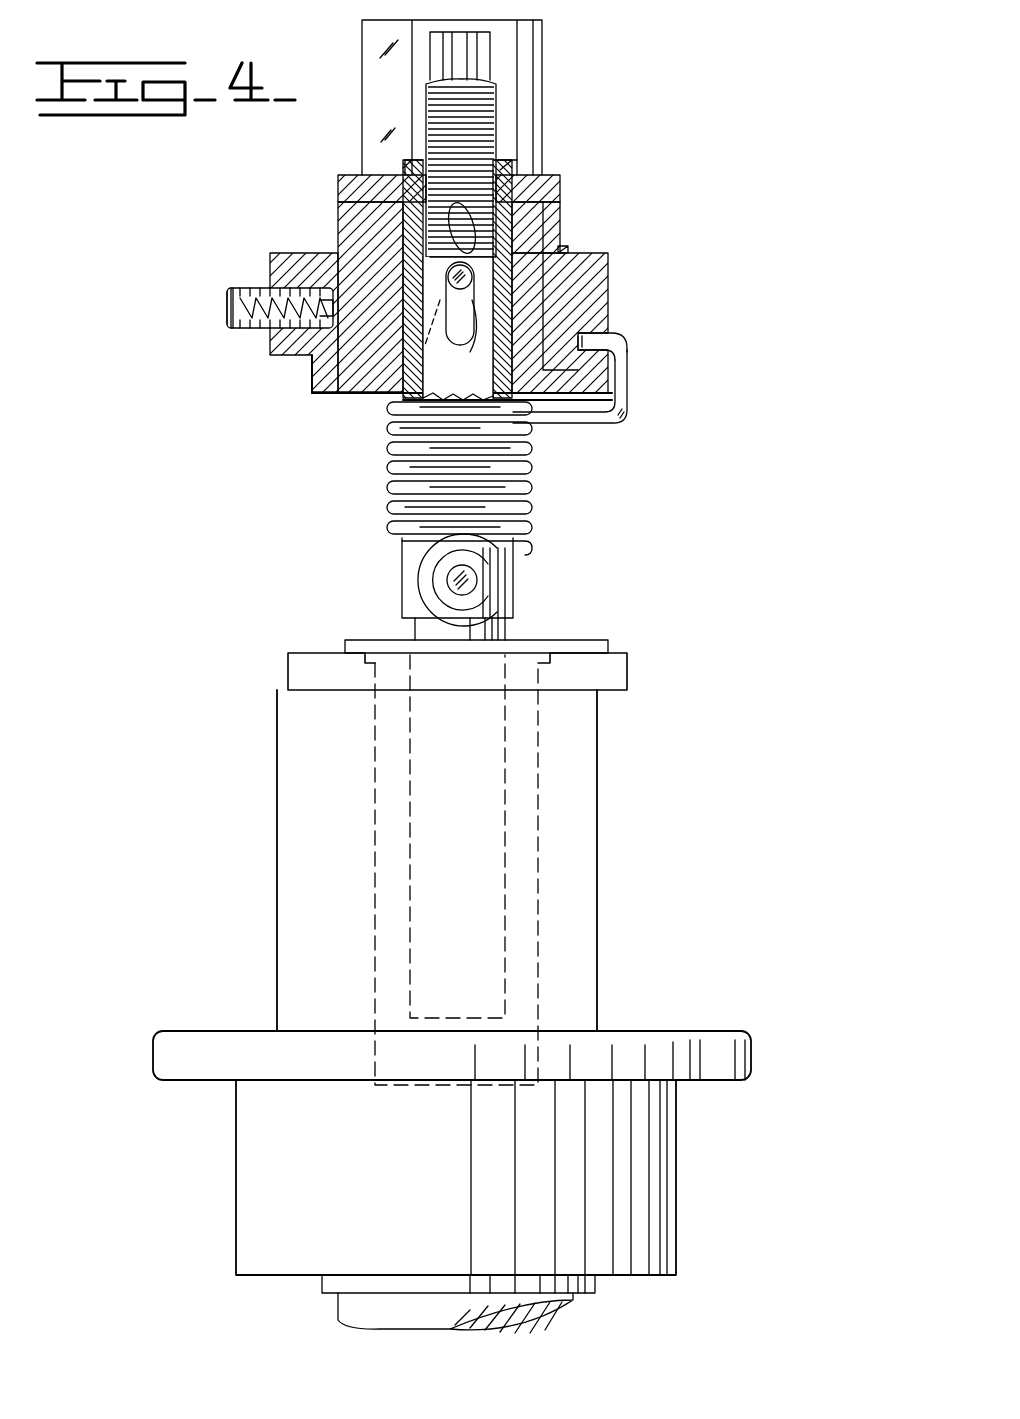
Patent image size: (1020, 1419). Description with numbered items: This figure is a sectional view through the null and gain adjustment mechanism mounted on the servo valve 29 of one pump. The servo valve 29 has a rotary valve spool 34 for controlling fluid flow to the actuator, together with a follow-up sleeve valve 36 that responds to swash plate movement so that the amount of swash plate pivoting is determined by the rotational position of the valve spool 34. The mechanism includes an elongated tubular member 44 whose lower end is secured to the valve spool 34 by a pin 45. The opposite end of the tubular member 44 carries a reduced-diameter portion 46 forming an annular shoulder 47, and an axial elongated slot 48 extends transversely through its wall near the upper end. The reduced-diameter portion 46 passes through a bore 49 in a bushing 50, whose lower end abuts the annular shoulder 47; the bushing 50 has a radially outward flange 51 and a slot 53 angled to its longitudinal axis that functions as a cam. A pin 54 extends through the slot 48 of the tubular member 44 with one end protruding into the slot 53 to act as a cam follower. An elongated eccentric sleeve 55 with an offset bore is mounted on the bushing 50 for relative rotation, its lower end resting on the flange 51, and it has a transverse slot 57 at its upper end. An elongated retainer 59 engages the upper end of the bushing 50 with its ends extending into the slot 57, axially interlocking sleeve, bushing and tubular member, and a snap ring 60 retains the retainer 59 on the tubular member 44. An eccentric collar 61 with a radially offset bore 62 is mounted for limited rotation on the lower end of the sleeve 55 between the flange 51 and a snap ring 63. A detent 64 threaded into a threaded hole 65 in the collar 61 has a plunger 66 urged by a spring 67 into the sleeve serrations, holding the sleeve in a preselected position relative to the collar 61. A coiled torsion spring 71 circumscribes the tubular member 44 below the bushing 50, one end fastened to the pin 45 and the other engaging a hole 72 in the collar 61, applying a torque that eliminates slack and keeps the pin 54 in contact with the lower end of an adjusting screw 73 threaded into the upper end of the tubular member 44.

The servo valve 29 is at (600, 728).
The valve spool 34 is at (512, 636).
The follow-up sleeve valve 36 is at (540, 795).
The tubular member 44 is at (410, 550).
The pin 45 is at (477, 580).
The reduced-diameter portion 46 is at (362, 394).
The annular shoulder 47 is at (403, 388).
The slot 48 is at (548, 305).
The bore 49 is at (520, 405).
The bushing 50 is at (535, 220).
The flange 51 is at (325, 393).
The slot 53 is at (472, 282).
The pin 54 is at (462, 332).
The eccentric sleeve 55 is at (533, 70).
The transverse slot 57 is at (373, 125).
The retainer 59 is at (545, 183).
The snap ring 60 is at (520, 178).
The eccentric collar 61 is at (608, 258).
The bore 62 is at (622, 378).
The snap ring 63 is at (568, 250).
The detent 64 is at (237, 330).
The threaded hole 65 is at (280, 300).
The plunger 66 is at (292, 358).
The spring 67 is at (250, 330).
The torsion spring 71 is at (532, 512).
The hole 72 is at (627, 345).
The adjusting screw 73 is at (483, 97).